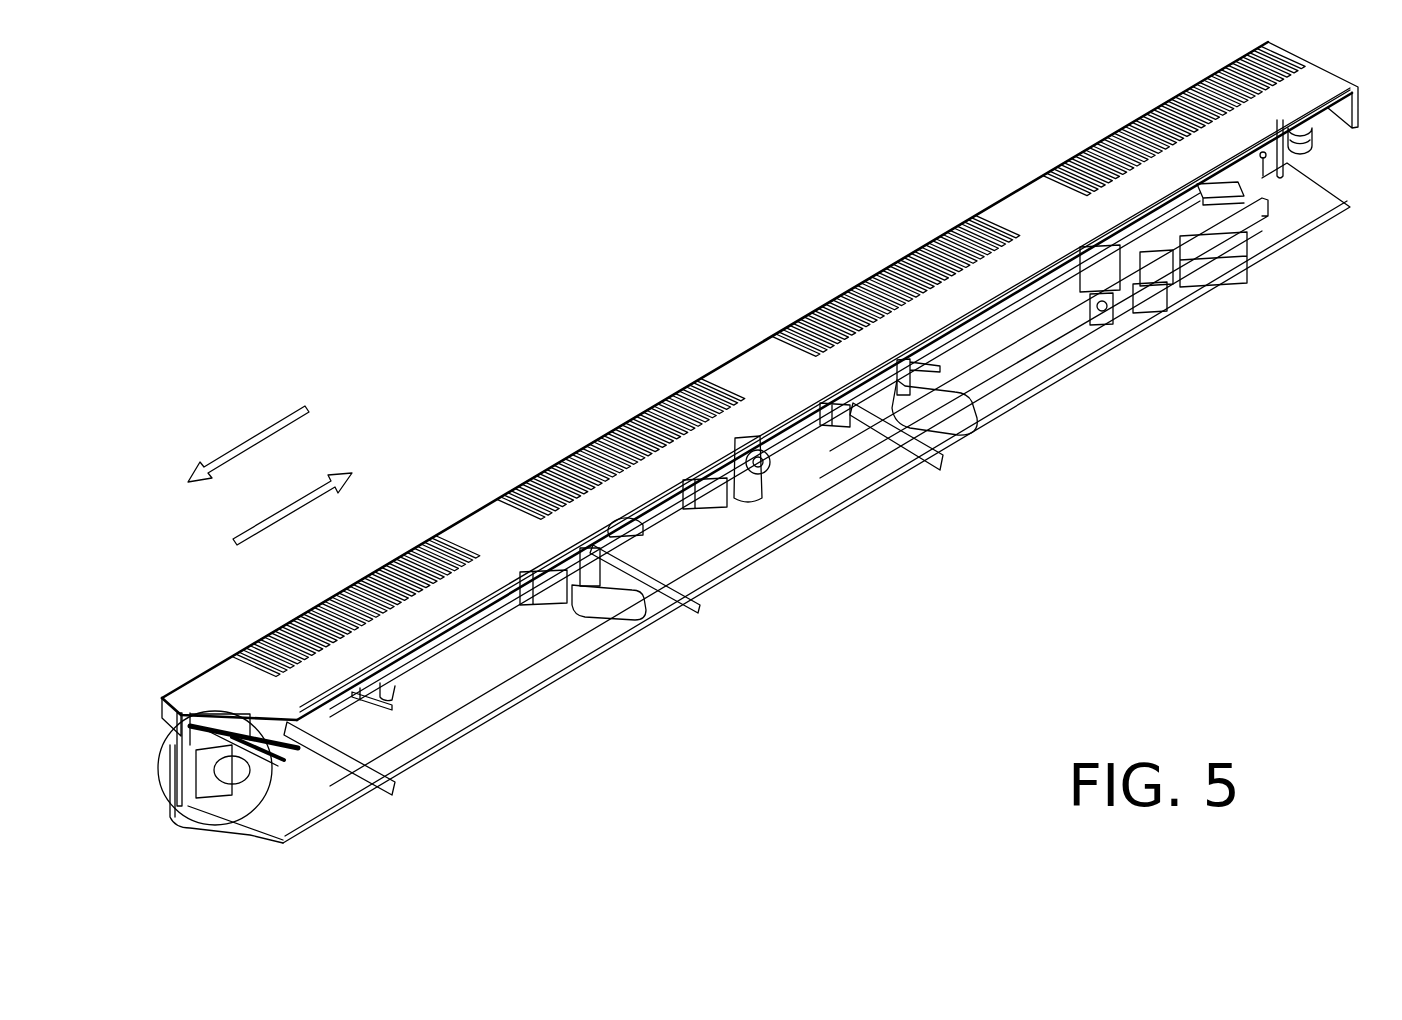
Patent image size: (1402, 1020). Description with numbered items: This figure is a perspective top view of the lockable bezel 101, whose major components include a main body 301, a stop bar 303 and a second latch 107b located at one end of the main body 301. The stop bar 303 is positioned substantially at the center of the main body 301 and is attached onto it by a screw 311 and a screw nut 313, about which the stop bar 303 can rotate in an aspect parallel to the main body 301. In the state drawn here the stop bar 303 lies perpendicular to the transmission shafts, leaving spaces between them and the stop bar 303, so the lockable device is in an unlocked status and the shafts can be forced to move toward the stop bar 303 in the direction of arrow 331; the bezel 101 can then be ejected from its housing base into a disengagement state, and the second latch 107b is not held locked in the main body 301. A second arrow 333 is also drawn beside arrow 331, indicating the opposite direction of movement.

The lockable bezel 101 is at (866, 85).
The main body 301 is at (753, 367).
The stop bar 303 is at (760, 497).
The screw 311 is at (778, 468).
The screw nut 313 is at (783, 466).
The second latch 107b is at (195, 768).
The arrow 331 is at (292, 501).
The release direction 333 is at (248, 435).